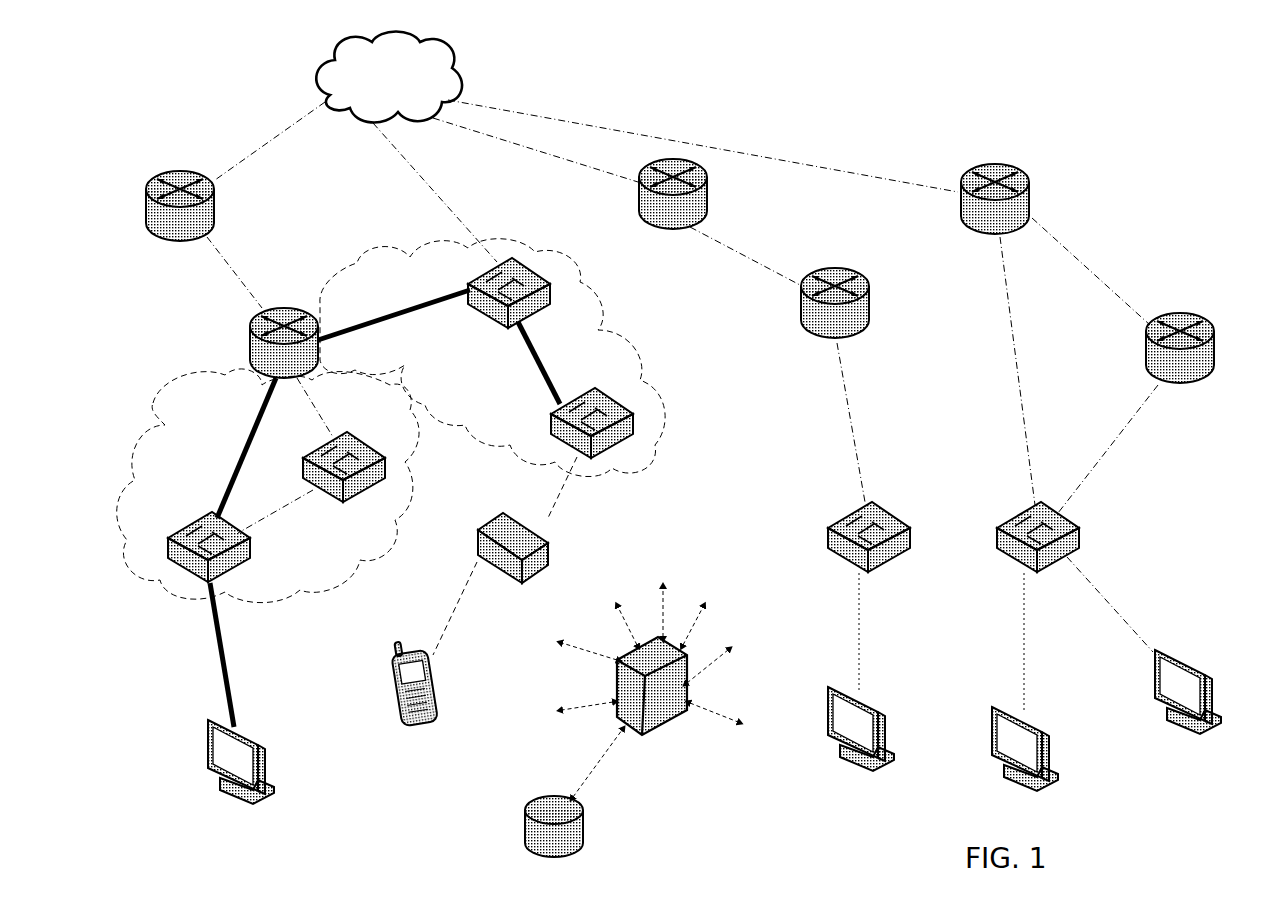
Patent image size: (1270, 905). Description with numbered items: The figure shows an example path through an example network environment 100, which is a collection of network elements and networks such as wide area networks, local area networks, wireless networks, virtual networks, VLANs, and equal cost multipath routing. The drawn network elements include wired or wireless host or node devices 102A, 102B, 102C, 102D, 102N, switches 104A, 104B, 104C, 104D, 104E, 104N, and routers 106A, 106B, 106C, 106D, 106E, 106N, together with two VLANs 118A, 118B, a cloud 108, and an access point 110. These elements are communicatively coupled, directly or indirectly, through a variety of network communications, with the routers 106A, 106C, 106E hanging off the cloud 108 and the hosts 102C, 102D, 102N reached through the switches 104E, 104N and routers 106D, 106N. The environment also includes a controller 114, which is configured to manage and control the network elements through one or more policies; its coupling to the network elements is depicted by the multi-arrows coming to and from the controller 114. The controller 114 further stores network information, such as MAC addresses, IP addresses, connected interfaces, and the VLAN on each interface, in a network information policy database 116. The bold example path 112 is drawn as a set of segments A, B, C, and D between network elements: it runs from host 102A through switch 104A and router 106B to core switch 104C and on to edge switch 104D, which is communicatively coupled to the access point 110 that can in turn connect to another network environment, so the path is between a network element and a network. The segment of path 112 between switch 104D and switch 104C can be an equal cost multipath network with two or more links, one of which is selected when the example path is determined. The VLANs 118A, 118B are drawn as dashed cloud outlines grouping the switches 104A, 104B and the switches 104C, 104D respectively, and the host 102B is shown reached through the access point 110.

The network environment 100 is at (1168, 113).
The host device 102A is at (224, 777).
The host device 102B is at (421, 695).
The host device 102C is at (861, 741).
The host device 102D is at (1027, 762).
The host device 102N is at (1201, 713).
The switch 104A is at (253, 548).
The switch 104B is at (341, 479).
The switch 104C is at (559, 290).
The edge switch 104D is at (610, 447).
The switch 104E is at (901, 548).
The switch 104N is at (1094, 537).
The router 106A is at (234, 206).
The router 106B is at (231, 343).
The router 106C is at (621, 194).
The router 106D is at (798, 312).
The router 106E is at (1058, 199).
The router 106N is at (1199, 367).
The cloud 108 is at (389, 77).
The access point 110 is at (528, 570).
The path 112 is at (163, 663).
The controller 114 is at (650, 682).
The network information policy database 116 is at (564, 805).
The VLAN 118A is at (158, 532).
The VLAN 118B is at (675, 395).